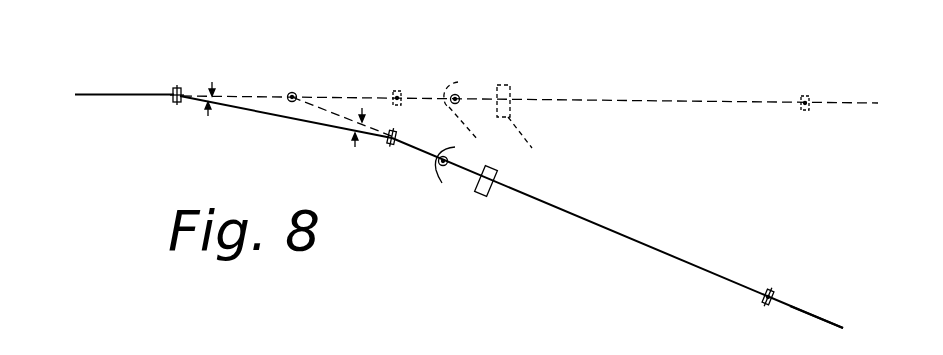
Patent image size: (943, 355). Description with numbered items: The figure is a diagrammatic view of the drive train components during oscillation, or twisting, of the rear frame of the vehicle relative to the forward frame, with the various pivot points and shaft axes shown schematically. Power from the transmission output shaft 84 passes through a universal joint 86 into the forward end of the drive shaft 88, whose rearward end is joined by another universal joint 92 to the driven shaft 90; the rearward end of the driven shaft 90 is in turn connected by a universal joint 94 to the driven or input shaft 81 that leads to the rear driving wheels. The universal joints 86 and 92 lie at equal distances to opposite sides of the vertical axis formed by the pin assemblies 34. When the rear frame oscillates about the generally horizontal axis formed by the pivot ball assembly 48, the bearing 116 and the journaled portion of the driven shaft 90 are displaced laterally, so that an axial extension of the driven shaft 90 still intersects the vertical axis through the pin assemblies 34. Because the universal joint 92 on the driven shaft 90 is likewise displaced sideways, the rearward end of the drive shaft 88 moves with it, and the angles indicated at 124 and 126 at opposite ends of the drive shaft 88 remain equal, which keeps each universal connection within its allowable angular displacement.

The output shaft 84 is at (115, 92).
The universal joint 86 is at (175, 84).
The angle 124 is at (226, 100).
The pin assemblies 34 is at (292, 86).
The drive shaft 88 is at (348, 95).
The angle 126 is at (340, 128).
The universal joint 92 is at (393, 150).
The pivot ball assembly 48 is at (447, 157).
The bearing 116 is at (533, 148).
The driven shaft 90 is at (628, 103).
The universal joint 94 is at (767, 287).
The driven shaft 81 is at (818, 315).